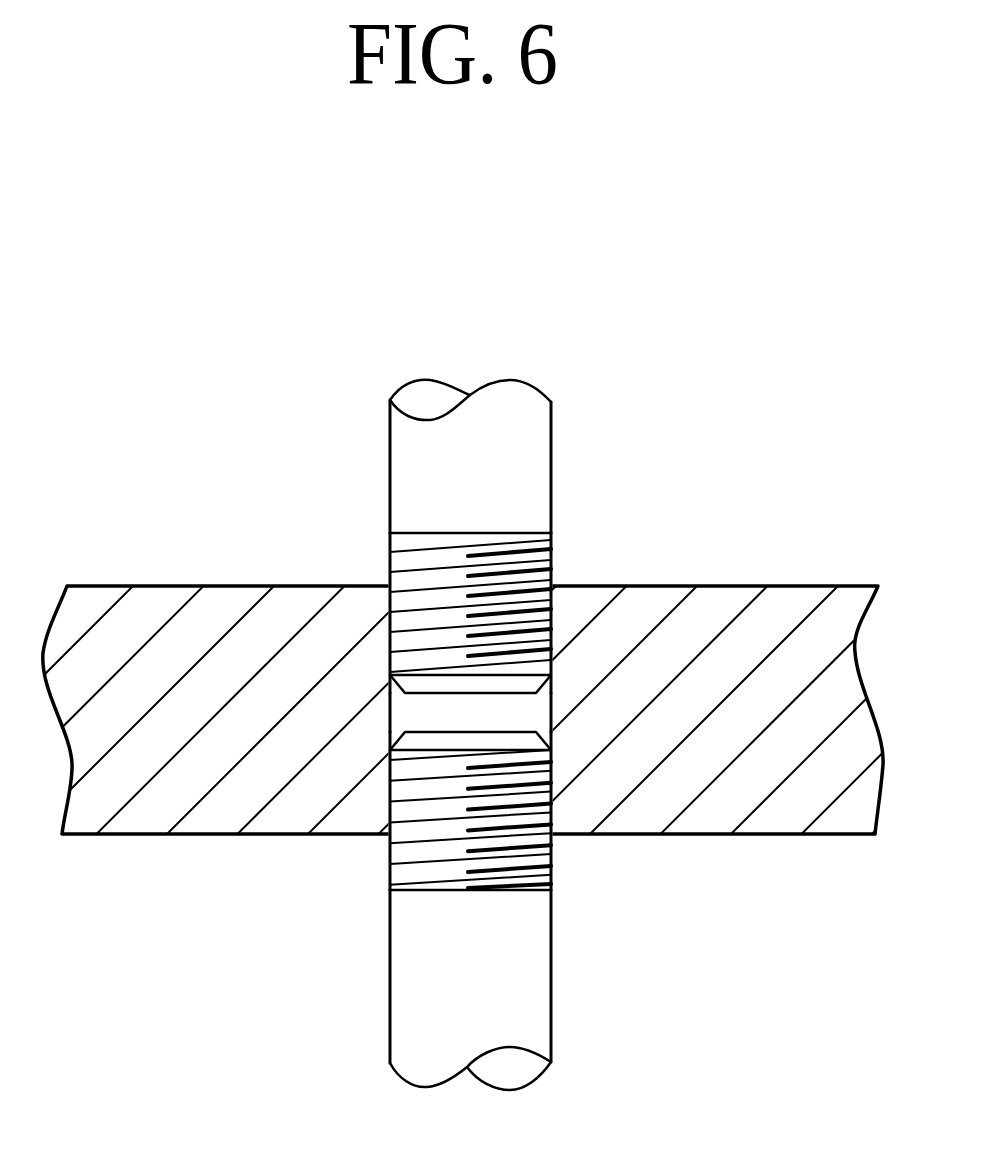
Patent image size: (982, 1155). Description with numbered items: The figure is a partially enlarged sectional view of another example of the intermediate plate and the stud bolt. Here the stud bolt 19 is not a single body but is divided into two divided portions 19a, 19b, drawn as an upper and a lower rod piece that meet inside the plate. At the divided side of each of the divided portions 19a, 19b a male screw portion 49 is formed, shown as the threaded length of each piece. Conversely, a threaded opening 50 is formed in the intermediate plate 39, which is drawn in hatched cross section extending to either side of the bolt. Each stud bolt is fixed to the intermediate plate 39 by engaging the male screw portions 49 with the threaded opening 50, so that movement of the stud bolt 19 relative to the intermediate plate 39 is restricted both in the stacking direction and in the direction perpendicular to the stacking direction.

The stud bolt 19 is at (494, 732).
The divided portion 19a is at (568, 452).
The divided portion 19b is at (567, 991).
The intermediate plate 39 is at (811, 573).
The male screw portion 49 is at (551, 623).
The threaded opening 50 is at (390, 696).